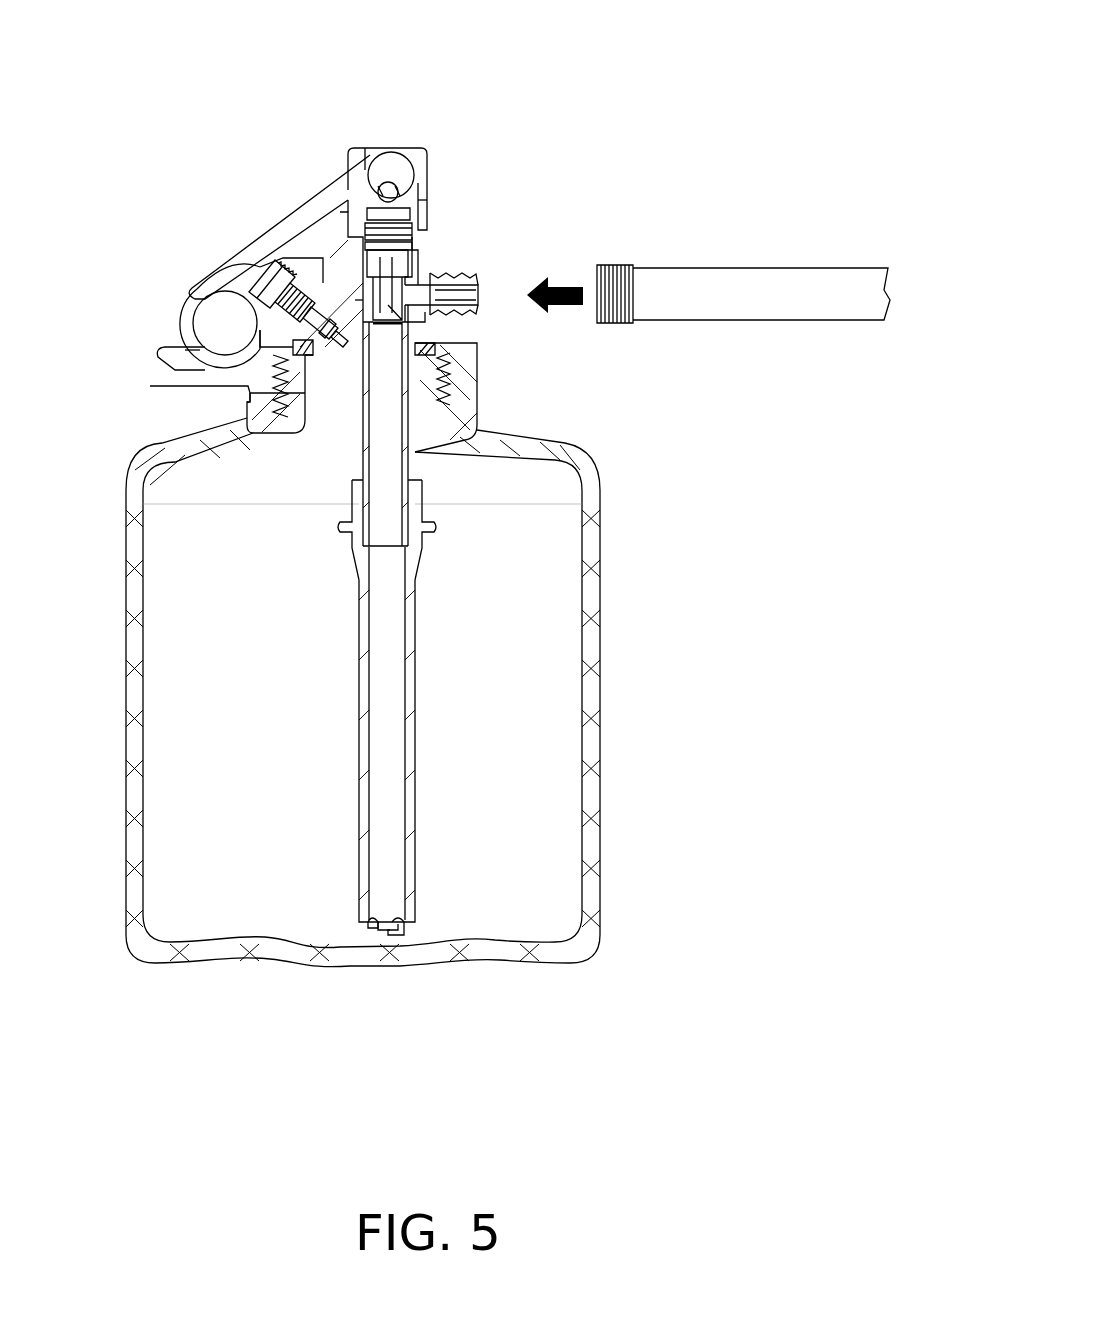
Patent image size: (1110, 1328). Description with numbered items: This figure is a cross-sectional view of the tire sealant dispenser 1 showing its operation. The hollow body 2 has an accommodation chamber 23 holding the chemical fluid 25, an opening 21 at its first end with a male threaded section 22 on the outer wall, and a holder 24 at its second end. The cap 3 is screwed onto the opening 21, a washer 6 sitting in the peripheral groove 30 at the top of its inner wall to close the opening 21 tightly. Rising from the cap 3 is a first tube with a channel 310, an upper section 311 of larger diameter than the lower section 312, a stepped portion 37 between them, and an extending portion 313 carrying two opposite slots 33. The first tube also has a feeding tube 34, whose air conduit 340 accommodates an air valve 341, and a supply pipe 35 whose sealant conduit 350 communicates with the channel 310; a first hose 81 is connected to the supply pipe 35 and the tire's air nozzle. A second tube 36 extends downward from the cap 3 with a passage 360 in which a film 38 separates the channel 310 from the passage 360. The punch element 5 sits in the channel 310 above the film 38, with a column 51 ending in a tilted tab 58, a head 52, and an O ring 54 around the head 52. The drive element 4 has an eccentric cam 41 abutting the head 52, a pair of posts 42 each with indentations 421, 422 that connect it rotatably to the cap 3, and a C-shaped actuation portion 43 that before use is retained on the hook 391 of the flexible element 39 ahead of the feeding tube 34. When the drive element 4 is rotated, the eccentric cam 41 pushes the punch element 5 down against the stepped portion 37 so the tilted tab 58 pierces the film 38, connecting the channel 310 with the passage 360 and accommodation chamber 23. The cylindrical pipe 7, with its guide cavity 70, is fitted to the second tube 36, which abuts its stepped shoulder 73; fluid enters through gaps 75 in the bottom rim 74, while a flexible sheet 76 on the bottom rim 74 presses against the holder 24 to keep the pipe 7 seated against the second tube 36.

The tire sealant dispenser 1 is at (120, 65).
The body 2 is at (135, 700).
The cap 3 is at (468, 373).
The drive element 4 is at (283, 228).
The punch element 5 is at (406, 262).
The washer 6 is at (258, 340).
The cylindrical pipe 7 is at (410, 690).
The opening 21 is at (320, 372).
The male threaded section 22 is at (250, 422).
The accommodation chamber 23 is at (170, 487).
The holder 24 is at (305, 965).
The chemical fluid 25 is at (568, 800).
The peripheral groove 30 is at (213, 293).
The slots 33 is at (420, 150).
The feeding tube 34 is at (268, 277).
The supply pipe 35 is at (473, 285).
The second tube 36 is at (410, 452).
The stepped portion 37 is at (477, 273).
The film 38 is at (452, 380).
The flexible element 39 is at (203, 377).
The eccentric cam 41 is at (393, 165).
The posts 42 is at (398, 185).
The C-shaped actuation portion 43 is at (185, 310).
The column 51 is at (423, 312).
The head 52 is at (397, 210).
The O ring 54 is at (404, 228).
The tilted tab 58 is at (420, 340).
The guide cavity 70 is at (390, 643).
The stepped shoulder 73 is at (417, 562).
The bottom rim 74 is at (370, 925).
The gaps 75 is at (378, 928).
The flexible sheet 76 is at (400, 930).
The first hose 81 is at (731, 288).
The channel 310 is at (425, 280).
The upper section 311 is at (360, 205).
The lower section 312 is at (362, 298).
The extending portion 313 is at (412, 195).
The air conduit 340 is at (280, 262).
The air valve 341 is at (298, 310).
The sealant conduit 350 is at (468, 295).
The passage 360 is at (390, 468).
The hook 391 is at (195, 348).
The indentation 421 is at (375, 190).
The indentation 422 is at (410, 178).